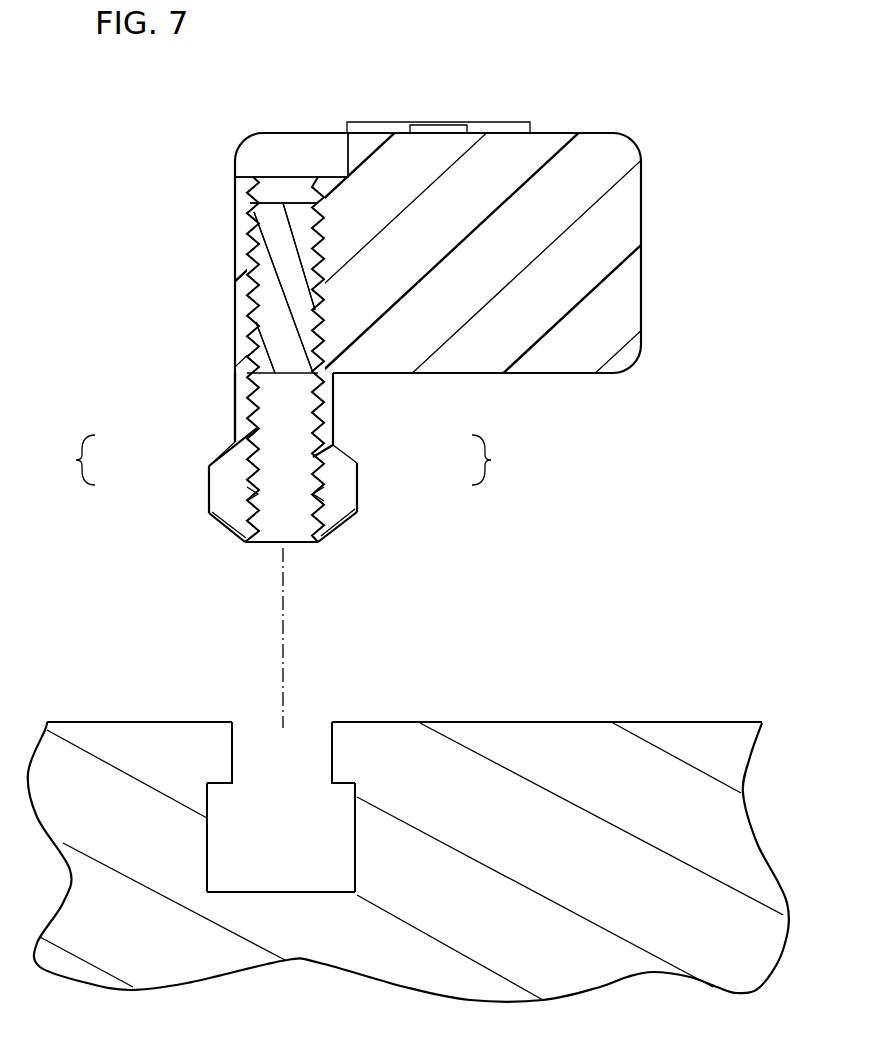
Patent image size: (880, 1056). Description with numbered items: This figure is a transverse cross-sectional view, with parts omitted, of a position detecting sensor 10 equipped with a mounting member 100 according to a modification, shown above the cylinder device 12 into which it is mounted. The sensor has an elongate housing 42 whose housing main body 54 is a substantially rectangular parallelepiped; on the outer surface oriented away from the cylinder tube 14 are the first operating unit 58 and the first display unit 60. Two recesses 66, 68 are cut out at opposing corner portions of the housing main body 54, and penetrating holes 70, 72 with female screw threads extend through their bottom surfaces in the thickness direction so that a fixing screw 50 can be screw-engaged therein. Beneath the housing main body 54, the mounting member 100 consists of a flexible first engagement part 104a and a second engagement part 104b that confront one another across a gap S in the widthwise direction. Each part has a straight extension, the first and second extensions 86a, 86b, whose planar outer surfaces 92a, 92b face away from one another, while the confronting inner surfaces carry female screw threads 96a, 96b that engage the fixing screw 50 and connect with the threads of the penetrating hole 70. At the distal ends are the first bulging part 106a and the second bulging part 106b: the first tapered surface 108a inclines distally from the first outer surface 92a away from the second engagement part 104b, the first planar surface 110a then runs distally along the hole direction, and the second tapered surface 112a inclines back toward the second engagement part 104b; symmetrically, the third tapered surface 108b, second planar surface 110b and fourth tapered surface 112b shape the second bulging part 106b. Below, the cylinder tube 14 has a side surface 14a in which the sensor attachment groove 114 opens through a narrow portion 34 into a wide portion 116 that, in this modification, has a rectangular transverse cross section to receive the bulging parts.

The position detecting sensor 10 is at (451, 389).
The cylinder device 12 is at (408, 827).
The cylinder tube 14 is at (680, 735).
The side surface 14a is at (113, 722).
The narrow portion 34 is at (265, 735).
The housing 42 is at (459, 92).
The fixing screw 50 is at (270, 207).
The housing main body 54 is at (497, 152).
The first operating unit 58 is at (373, 122).
The first display unit 60 is at (437, 125).
The recess 66 is at (280, 143).
The recess 68 is at (291, 155).
The penetrating hole 70 is at (262, 245).
The penetrating hole 72 is at (284, 288).
The first extension 86a is at (245, 392).
The second extension 86b is at (338, 392).
The first outer surface 92a is at (233, 373).
The second outer surface 92b is at (343, 393).
The female screw threads 96a is at (245, 512).
The female screw threads 96b is at (325, 523).
The mounting member 100 is at (317, 550).
The first engagement part 104a is at (173, 359).
The second engagement part 104b is at (425, 359).
The first bulging part 106a is at (221, 481).
The second bulging part 106b is at (345, 480).
The first tapered surface 108a is at (215, 458).
The third tapered surface 108b is at (336, 444).
The first planar surface 110a is at (253, 493).
The second planar surface 110b is at (322, 508).
The second tapered surface 112a is at (227, 523).
The fourth tapered surface 112b is at (317, 527).
The sensor attachment groove 114 is at (225, 896).
The wide portion 116 is at (292, 860).
The gap S is at (272, 528).